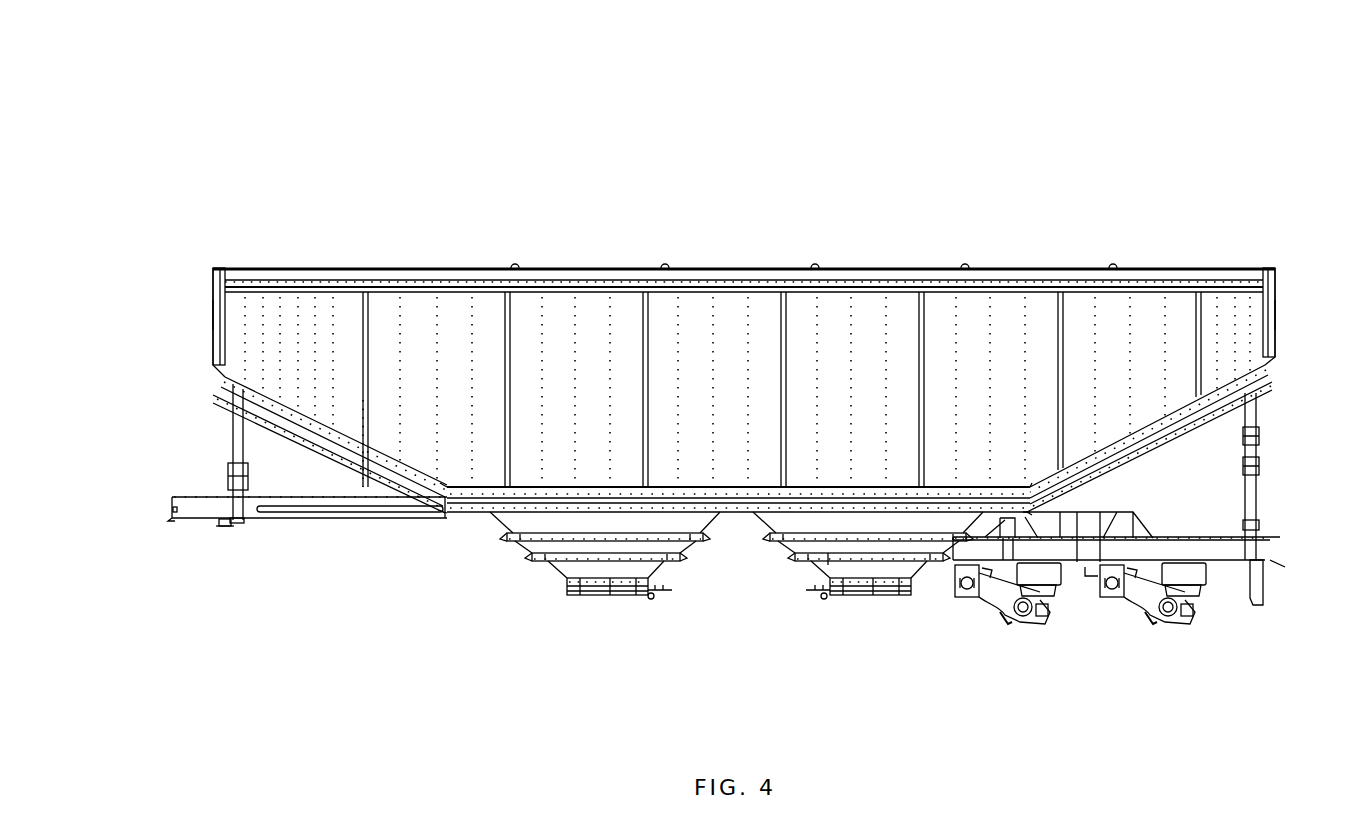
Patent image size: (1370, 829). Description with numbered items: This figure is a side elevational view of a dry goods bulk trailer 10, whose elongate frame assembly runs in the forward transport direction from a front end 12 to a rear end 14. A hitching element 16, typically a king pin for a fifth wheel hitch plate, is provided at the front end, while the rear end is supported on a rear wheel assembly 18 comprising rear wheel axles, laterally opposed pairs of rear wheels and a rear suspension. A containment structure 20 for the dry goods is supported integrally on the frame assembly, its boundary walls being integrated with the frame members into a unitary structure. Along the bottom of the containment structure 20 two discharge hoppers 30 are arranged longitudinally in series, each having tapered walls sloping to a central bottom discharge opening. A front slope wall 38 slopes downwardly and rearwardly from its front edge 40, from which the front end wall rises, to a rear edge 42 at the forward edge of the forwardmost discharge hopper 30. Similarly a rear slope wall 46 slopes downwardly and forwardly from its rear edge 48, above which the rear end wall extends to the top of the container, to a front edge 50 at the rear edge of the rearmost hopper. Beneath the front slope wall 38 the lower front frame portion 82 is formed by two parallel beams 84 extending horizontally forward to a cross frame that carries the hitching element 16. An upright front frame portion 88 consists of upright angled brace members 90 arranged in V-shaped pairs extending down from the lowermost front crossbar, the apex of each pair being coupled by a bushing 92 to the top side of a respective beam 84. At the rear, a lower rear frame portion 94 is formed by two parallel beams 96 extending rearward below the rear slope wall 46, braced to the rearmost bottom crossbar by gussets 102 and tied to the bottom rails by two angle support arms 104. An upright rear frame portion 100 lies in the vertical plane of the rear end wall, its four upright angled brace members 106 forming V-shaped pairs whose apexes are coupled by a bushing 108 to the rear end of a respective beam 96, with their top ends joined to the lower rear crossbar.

The dry goods bulk trailer 10 is at (496, 95).
The front end 12 is at (188, 226).
The rear end 14 is at (1268, 233).
The hitching element 16 is at (222, 529).
The rear wheel assembly 18 is at (1112, 613).
The containment structure 20 is at (734, 318).
The discharge hoppers 30 is at (611, 607).
The front slope wall 38 is at (336, 432).
The front edge 40 is at (222, 379).
The rear edge 42 is at (436, 479).
The rear slope wall 46 is at (1158, 420).
The rear edge 48 is at (1268, 371).
The rear lower bend 50 is at (1035, 478).
The lower front frame portion 82 is at (186, 487).
The beams 84 is at (191, 513).
The upright front frame portion 88 is at (197, 431).
The upright angled brace members 90 is at (236, 450).
The bushing 92 is at (237, 522).
The lower rear frame portion 94 is at (1228, 568).
The beams 96 is at (1230, 549).
The upright rear frame portion 100 is at (1268, 459).
The gussets 102 is at (1034, 527).
The angle support arms 104 is at (348, 513).
The upright angled brace members 106 is at (1256, 414).
The bushing 108 is at (1251, 526).